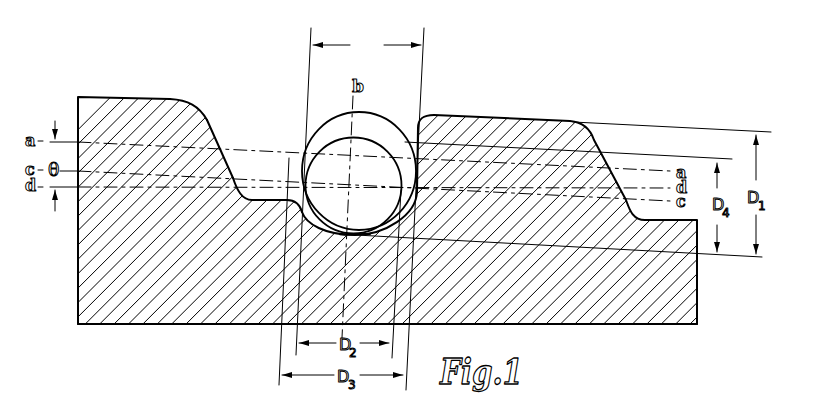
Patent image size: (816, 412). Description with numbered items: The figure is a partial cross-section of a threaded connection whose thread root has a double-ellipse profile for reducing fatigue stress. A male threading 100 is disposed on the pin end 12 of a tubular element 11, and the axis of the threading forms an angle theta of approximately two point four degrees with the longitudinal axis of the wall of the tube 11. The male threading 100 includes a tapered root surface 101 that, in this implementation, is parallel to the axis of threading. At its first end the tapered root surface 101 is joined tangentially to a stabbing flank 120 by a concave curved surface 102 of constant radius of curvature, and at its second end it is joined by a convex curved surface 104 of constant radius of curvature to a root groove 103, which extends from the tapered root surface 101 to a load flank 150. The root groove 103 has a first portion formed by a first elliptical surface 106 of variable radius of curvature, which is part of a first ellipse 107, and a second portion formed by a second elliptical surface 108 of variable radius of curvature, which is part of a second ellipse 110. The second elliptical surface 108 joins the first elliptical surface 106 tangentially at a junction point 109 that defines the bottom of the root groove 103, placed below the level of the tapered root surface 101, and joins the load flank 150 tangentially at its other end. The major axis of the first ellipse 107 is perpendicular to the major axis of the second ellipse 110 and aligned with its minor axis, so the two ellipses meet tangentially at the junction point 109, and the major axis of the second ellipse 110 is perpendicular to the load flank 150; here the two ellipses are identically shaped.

The male threading 100 is at (159, 82).
The tubular element 11 is at (70, 309).
The pin end 12 is at (95, 270).
The stabbing flank 120 is at (215, 124).
The concave curved surface 102 is at (251, 196).
The tapered root surface 101 is at (273, 198).
The second ellipse 110 is at (296, 173).
The root groove 103 is at (360, 209).
The convex curved surface 104 is at (296, 212).
The first elliptical surface 106 is at (331, 216).
The first ellipse 107 is at (337, 111).
The second elliptical surface 108 is at (394, 233).
The junction point 109 is at (349, 237).
The load flank 150 is at (418, 134).